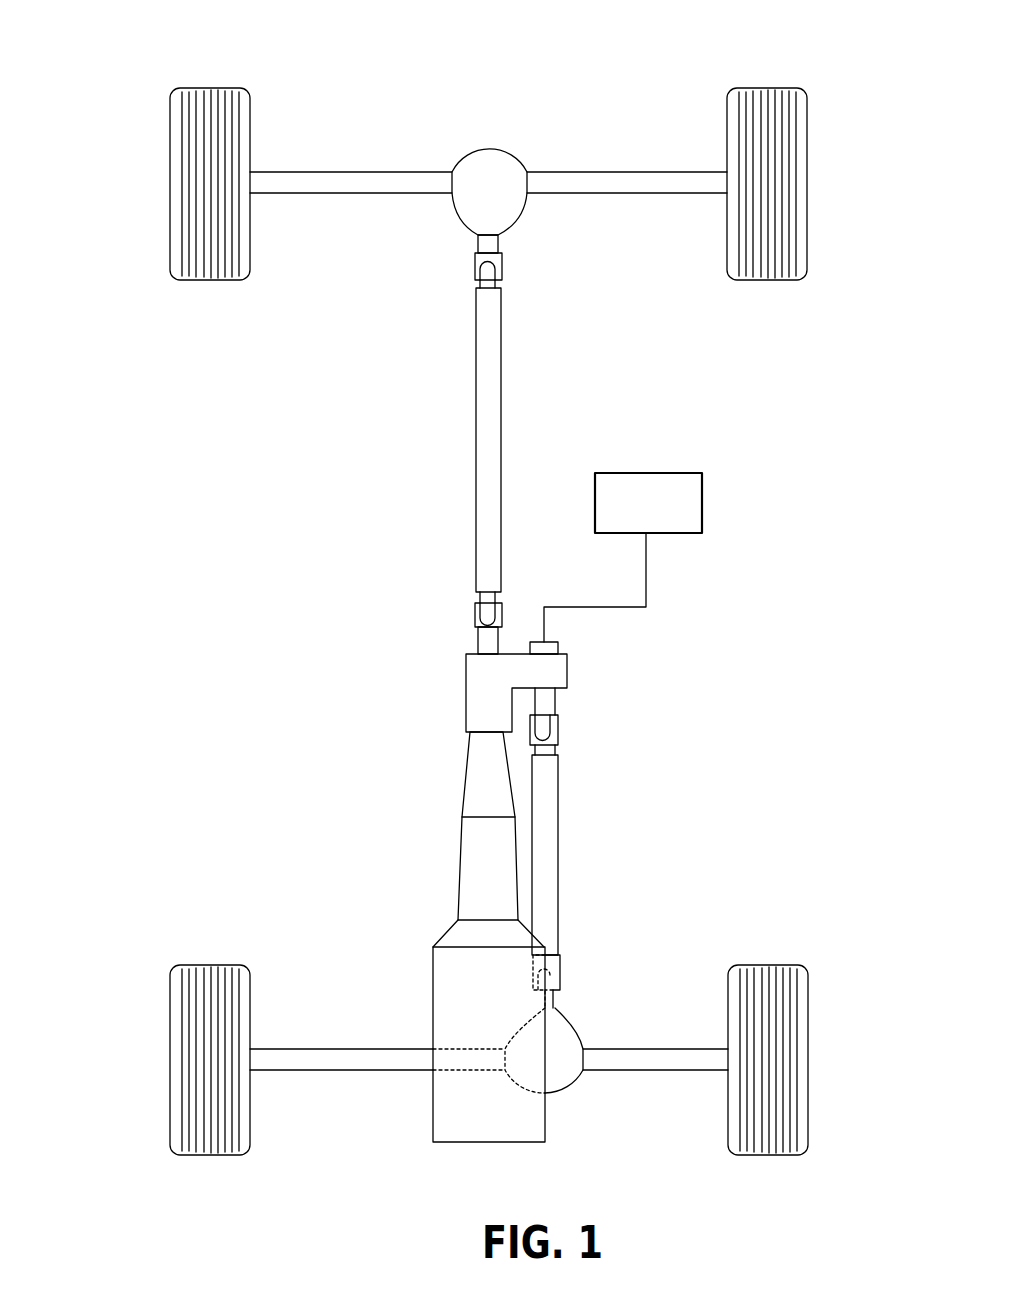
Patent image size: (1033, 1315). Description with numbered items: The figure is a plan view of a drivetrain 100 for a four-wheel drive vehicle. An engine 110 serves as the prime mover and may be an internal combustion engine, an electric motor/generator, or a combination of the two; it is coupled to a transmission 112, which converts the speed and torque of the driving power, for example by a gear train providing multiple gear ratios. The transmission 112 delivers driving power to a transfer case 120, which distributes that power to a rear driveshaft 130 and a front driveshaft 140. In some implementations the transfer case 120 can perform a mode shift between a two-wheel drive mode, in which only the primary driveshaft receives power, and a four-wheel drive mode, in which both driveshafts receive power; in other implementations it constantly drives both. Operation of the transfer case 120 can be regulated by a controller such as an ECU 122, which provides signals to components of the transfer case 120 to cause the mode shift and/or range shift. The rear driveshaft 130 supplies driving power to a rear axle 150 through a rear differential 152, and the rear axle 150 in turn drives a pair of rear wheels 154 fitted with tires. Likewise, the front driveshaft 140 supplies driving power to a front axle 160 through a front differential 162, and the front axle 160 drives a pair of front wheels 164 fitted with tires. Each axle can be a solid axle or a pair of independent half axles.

The drivetrain 100 is at (110, 103).
The engine 110 is at (443, 997).
The transmission 112 is at (462, 866).
The transfer case 120 is at (470, 693).
The ECU 122 is at (702, 503).
The rear driveshaft 130 is at (490, 440).
The front driveshaft 140 is at (558, 838).
The rear axle 150 is at (640, 175).
The rear differential 152 is at (495, 160).
The rear wheels 154 is at (250, 122).
The front axle 160 is at (668, 1058).
The front differential 162 is at (563, 1040).
The front wheels 164 is at (215, 965).